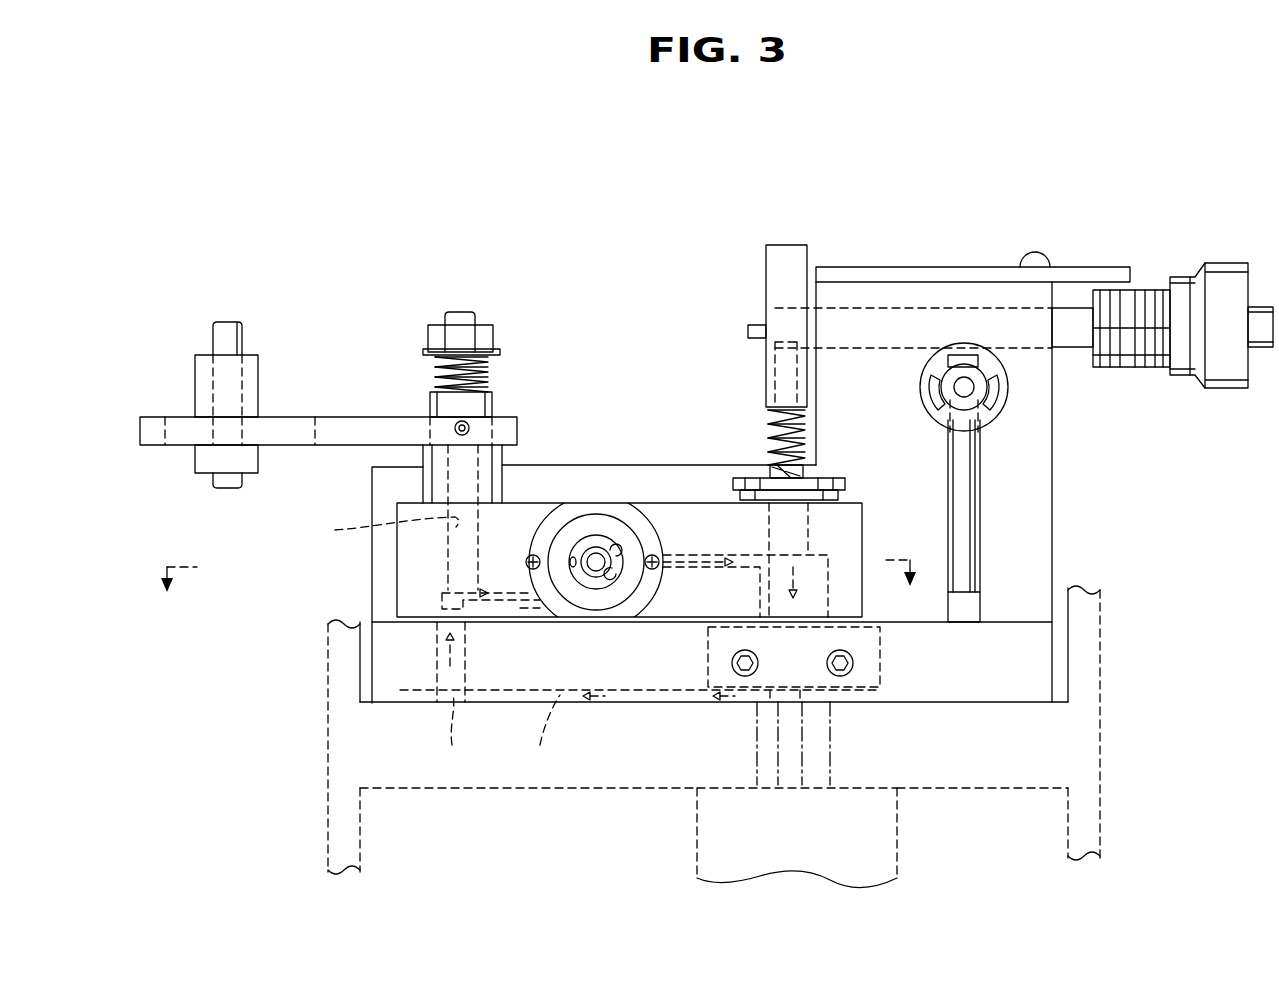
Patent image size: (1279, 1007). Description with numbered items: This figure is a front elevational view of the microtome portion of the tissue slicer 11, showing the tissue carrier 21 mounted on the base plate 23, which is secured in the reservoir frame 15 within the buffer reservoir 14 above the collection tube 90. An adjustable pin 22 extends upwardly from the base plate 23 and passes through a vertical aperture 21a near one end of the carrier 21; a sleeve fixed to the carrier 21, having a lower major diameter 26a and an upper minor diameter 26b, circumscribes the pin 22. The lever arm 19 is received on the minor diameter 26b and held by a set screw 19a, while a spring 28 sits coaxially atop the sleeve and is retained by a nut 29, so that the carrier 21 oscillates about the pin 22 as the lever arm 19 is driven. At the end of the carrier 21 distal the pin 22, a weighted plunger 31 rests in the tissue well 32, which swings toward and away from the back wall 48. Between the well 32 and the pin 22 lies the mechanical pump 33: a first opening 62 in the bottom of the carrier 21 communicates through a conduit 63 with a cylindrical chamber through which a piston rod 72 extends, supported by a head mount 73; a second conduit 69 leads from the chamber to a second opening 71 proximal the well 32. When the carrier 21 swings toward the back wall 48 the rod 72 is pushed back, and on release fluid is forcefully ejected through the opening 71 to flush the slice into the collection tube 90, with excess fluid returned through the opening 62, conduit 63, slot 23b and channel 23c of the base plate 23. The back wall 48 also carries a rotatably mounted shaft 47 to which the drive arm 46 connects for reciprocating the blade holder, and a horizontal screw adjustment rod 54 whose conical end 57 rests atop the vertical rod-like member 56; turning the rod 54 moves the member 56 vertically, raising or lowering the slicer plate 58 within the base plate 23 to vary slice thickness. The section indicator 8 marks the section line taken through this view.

The tissue slicer 11 is at (615, 252).
The adjustable pin 22 is at (460, 306).
The spring 28 is at (440, 372).
The nut 29 is at (484, 340).
The lever arm 19 is at (297, 412).
The set screw 19a is at (470, 427).
The lower major diameter 26a is at (420, 452).
The upper minor diameter 26b is at (436, 402).
The back wall 48 is at (543, 478).
The mechanical pump 33 is at (601, 503).
The second conduit 69 is at (700, 560).
The conical end 57 is at (758, 325).
The rod-like member 56 is at (783, 387).
The weighted plunger 31 is at (806, 478).
The shaft 47 is at (985, 392).
The drive arm 46 is at (967, 517).
The screw adjustment rod 54 is at (1072, 343).
The tissue well 32 is at (808, 545).
The vertical aperture 21a is at (368, 530).
The tissue carrier 21 is at (400, 565).
The first opening 62 is at (440, 608).
The conduit 63 is at (505, 604).
The piston rod 72 is at (597, 568).
The head mount 73 is at (622, 590).
The second opening 71 is at (812, 597).
The section line 8- 8 is at (538, 596).
The buffer reservoir 14 is at (1072, 597).
The base plate 23 is at (385, 669).
The slot 23b is at (450, 738).
The channel 23c is at (538, 738).
The slicer plate 58 is at (715, 655).
The reservoir frame 15 is at (330, 843).
The collection tube 90 is at (893, 832).